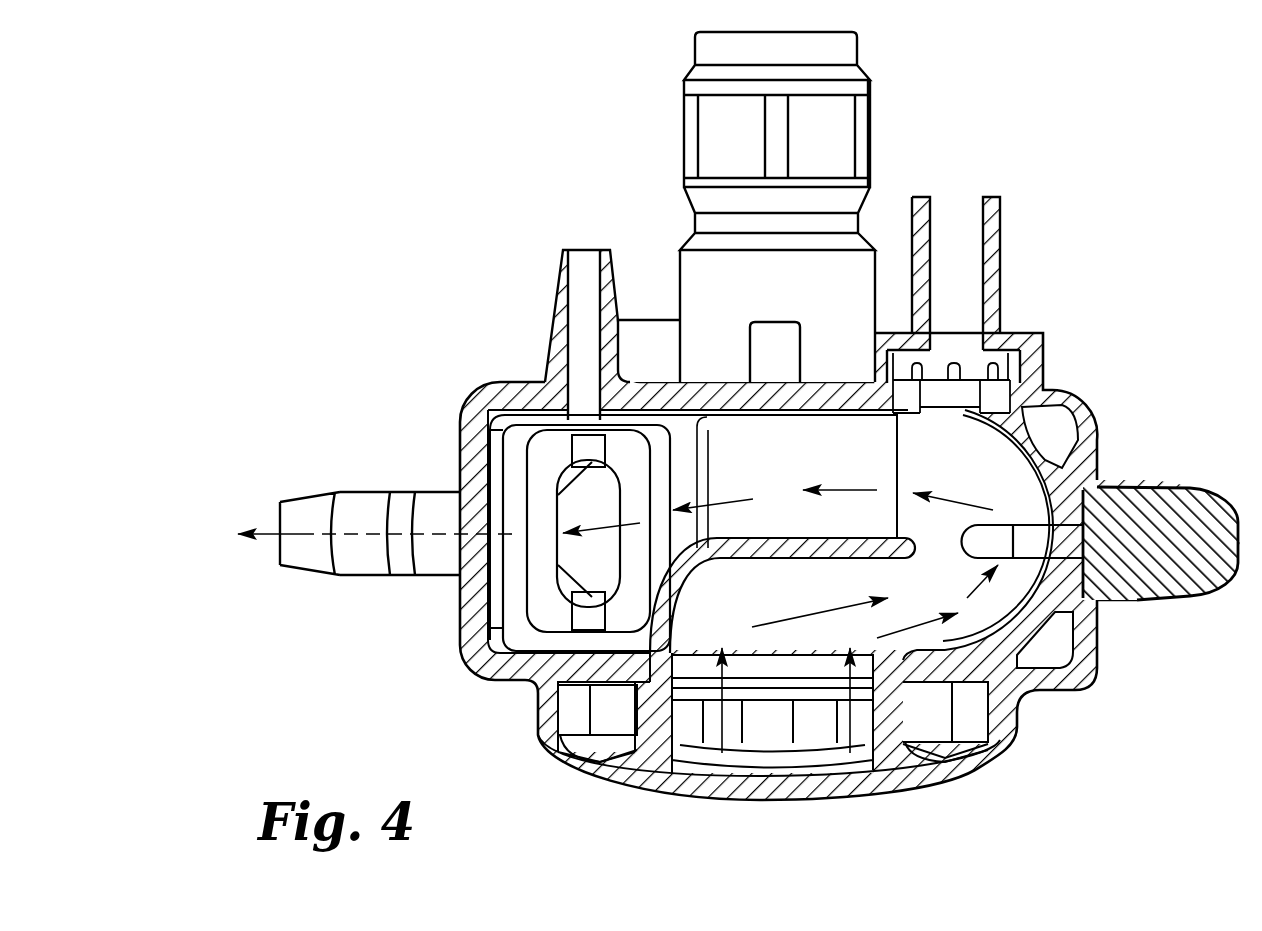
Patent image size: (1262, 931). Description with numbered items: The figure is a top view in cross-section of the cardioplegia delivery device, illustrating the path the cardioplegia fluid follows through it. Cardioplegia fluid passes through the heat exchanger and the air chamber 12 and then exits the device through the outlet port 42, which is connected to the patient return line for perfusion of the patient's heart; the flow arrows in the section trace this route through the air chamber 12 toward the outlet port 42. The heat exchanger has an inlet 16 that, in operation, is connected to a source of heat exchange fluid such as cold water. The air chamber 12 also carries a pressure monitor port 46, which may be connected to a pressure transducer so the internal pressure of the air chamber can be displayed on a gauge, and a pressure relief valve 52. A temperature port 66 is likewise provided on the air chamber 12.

The air chamber 12 is at (726, 800).
The inlet 16 is at (873, 82).
The outlet port 42 is at (337, 492).
The pressure monitor port 46 is at (557, 268).
The pressure relief valve 52 is at (1003, 255).
The temperature port 66 is at (1143, 600).